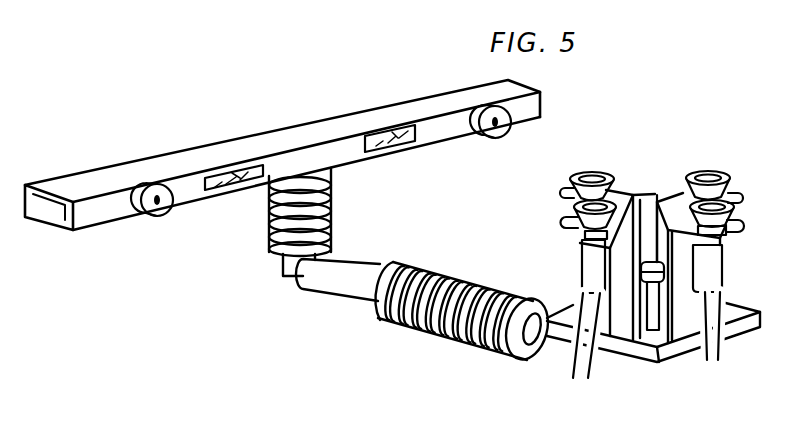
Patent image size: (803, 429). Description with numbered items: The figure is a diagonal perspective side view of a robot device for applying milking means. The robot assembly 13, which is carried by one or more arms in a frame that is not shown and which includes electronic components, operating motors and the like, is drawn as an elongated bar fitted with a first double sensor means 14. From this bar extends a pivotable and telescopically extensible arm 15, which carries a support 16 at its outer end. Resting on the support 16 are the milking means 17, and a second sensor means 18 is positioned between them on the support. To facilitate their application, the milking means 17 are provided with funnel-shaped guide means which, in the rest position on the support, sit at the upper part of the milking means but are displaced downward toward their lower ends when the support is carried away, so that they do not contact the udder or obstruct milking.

The robot assembly 13 is at (408, 64).
The first double sensor means 14 is at (236, 192).
The pivotable and telescopically extensible arm 15 is at (338, 285).
The support 16 is at (663, 363).
The milking means 17 is at (582, 274).
The second sensor means 18 is at (645, 262).